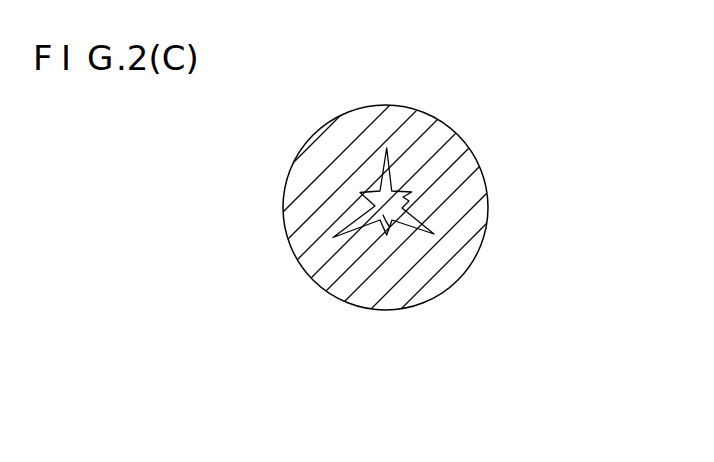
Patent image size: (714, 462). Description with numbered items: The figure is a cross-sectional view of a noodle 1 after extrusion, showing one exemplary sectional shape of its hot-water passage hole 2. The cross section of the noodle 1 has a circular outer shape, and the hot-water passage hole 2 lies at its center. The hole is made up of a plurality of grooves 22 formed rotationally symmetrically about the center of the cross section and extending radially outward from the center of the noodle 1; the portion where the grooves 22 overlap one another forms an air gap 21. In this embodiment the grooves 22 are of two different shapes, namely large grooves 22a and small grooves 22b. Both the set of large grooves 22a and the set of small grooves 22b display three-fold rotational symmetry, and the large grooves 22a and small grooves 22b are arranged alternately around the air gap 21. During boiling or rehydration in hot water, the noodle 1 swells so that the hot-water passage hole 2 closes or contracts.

The noodle 1 is at (473, 282).
The hot-water passage hole 2 is at (618, 140).
The air gap 21 is at (393, 225).
The grooves 22 is at (580, 112).
The large grooves 22a is at (390, 178).
The small grooves 22b is at (403, 198).